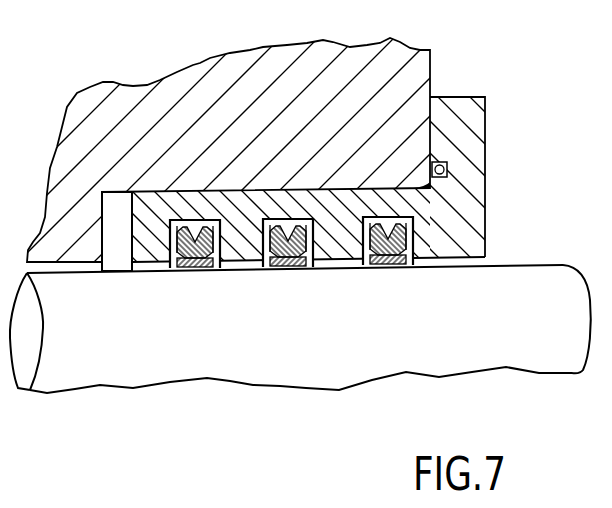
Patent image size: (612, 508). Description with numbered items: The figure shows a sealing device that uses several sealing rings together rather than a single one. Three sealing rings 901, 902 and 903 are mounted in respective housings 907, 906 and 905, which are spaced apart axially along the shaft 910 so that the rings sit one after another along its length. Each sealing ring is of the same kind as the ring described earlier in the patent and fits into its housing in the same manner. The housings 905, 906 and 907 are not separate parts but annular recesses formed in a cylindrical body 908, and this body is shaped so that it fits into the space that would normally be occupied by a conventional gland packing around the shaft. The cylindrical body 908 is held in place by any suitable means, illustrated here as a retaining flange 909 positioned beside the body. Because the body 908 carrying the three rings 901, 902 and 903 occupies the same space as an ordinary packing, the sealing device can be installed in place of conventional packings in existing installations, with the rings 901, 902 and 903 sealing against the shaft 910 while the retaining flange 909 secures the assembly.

The sealing ring 901 is at (193, 260).
The sealing ring 902 is at (287, 259).
The sealing ring 903 is at (387, 257).
The housing 905 is at (388, 228).
The housing 906 is at (287, 230).
The housing 907 is at (197, 230).
The cylindrical body 908 is at (163, 200).
The retaining flange 909 is at (462, 115).
The shaft 910 is at (518, 292).